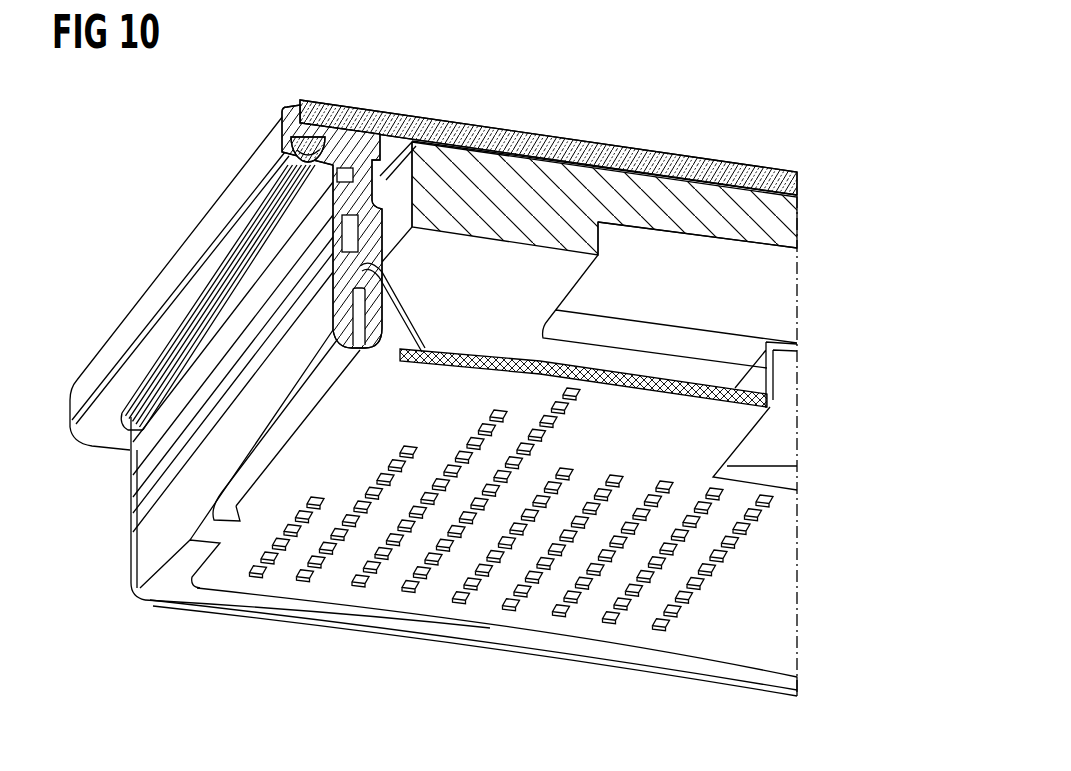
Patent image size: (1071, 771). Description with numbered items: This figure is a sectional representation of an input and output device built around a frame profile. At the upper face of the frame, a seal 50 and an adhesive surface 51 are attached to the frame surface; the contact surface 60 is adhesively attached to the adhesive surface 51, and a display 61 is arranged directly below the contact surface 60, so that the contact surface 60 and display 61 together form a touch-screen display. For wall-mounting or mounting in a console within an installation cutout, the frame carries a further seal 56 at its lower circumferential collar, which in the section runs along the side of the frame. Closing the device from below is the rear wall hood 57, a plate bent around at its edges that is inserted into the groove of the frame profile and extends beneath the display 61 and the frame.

The seal 50 is at (297, 104).
The adhesive surface 51 is at (344, 112).
The further seal 56 is at (250, 232).
The rear wall hood 57 is at (353, 415).
The contact surface 60 is at (648, 150).
The display 61 is at (533, 137).